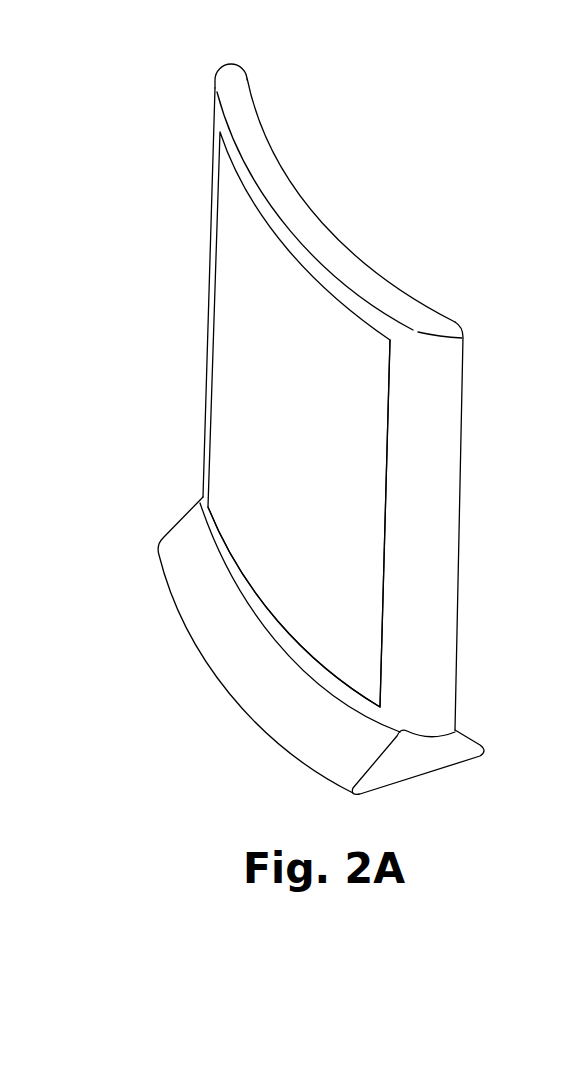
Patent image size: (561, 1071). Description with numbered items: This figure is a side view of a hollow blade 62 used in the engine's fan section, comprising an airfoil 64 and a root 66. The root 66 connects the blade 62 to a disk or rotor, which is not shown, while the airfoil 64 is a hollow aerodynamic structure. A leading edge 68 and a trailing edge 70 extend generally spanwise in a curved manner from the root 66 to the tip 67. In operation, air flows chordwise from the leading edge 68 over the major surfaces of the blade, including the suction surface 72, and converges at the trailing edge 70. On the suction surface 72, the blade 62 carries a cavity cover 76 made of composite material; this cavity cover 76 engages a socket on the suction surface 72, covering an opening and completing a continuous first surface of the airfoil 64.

The hollow blade 62 is at (427, 152).
The airfoil 64 is at (142, 357).
The root 66 is at (227, 642).
The tip 67 is at (238, 102).
The leading edge 68 is at (213, 175).
The trailing edge 70 is at (438, 500).
The suction surface 72 is at (172, 425).
The cavity cover 76 is at (243, 281).